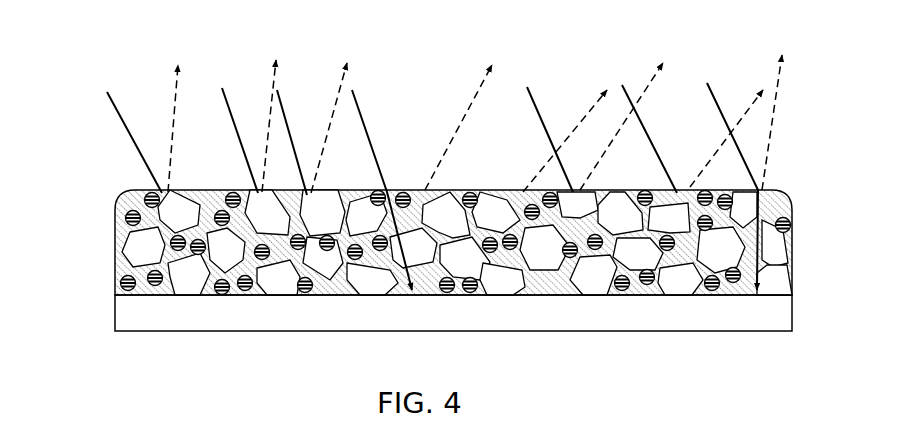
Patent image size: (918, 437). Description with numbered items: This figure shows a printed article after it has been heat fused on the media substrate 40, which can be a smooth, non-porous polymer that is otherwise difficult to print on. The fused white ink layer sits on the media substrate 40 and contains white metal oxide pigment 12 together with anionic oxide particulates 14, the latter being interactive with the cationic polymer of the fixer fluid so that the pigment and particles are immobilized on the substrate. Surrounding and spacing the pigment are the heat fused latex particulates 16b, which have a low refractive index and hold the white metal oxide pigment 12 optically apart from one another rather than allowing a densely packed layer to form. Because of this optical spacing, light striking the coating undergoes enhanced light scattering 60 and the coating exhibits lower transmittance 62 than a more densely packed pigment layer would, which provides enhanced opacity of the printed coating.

The white metal oxide pigment 12 is at (142, 242).
The anionic oxide particulates 14 is at (122, 283).
The latex particulates 16b is at (140, 207).
The media substrate 40 is at (467, 323).
The light scattering 60 is at (458, 128).
The transmittance 62 is at (757, 220).